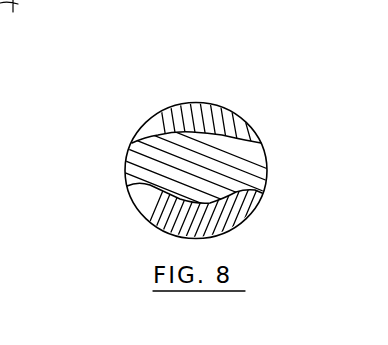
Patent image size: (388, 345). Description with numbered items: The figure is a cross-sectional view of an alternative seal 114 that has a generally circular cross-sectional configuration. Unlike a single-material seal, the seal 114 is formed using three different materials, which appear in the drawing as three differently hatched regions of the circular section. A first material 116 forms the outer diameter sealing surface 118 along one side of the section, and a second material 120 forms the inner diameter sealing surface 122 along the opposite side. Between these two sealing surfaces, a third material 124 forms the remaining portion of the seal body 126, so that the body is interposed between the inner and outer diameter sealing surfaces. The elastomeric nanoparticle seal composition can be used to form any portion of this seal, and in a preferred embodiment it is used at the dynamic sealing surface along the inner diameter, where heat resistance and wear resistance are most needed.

The seal 114 is at (277, 123).
The first material 116 is at (152, 130).
The outer diameter sealing surface 118 is at (202, 100).
The second material 120 is at (230, 196).
The inner diameter sealing surface 122 is at (192, 236).
The third material 124 is at (138, 167).
The seal body 126 is at (247, 170).